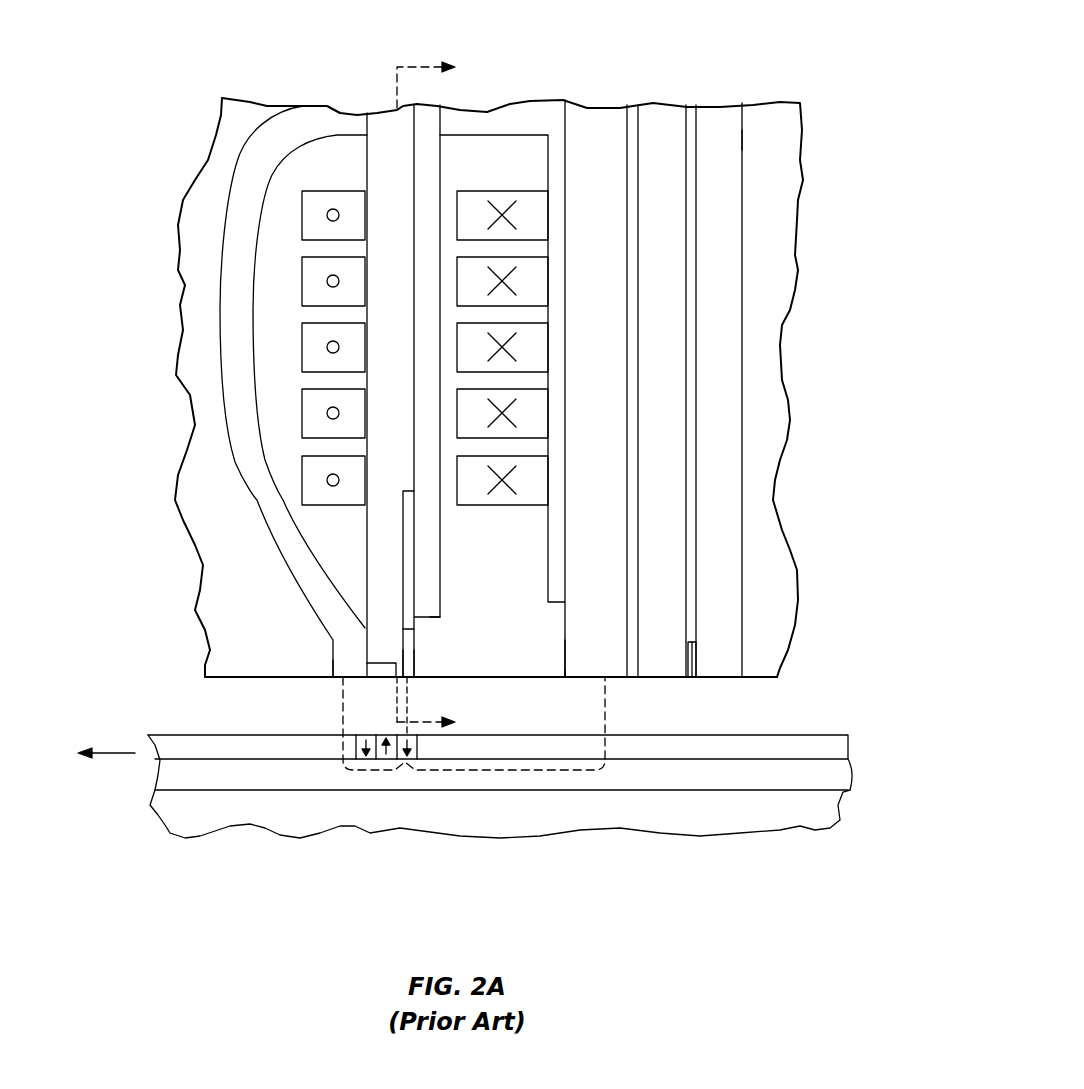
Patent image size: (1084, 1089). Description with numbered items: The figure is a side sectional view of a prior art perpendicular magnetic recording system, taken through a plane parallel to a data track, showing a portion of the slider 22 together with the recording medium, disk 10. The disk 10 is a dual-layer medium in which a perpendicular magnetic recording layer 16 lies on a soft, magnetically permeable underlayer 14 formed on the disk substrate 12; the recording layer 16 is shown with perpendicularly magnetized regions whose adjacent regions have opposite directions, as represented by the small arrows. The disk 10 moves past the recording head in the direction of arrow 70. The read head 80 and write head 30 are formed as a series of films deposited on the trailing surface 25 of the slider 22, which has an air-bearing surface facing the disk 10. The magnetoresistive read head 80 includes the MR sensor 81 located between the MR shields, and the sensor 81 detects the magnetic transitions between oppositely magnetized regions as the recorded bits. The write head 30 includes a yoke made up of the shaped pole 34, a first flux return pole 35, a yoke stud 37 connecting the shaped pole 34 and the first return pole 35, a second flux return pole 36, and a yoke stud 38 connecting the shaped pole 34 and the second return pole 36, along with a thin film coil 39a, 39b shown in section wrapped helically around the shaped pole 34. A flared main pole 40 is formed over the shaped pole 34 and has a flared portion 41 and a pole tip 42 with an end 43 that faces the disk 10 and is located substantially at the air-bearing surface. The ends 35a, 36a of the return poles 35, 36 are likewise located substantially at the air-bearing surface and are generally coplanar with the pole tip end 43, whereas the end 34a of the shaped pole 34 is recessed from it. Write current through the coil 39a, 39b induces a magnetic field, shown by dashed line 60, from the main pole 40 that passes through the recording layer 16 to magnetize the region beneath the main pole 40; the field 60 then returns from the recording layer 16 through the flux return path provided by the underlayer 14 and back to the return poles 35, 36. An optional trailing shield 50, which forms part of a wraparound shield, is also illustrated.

The disk 10 is at (467, 779).
The disk substrate 12 is at (200, 820).
The soft underlayer 14 is at (170, 772).
The recording layer 16 is at (213, 737).
The slider 22 is at (803, 178).
The trailing surface 25 is at (742, 137).
The write head 30 is at (242, 54).
The shaped pole 34 is at (430, 290).
The end of shaped pole 34a is at (432, 617).
The first flux return pole 35 is at (575, 648).
The end of first return pole 35a is at (605, 680).
The second flux return pole 36 is at (305, 595).
The end of second return pole 36a is at (337, 680).
The yoke stud 37 is at (530, 112).
The yoke stud 38 is at (390, 122).
The coil 39a is at (518, 191).
The coil 39b is at (335, 191).
The flared main pole 40 is at (413, 491).
The flared portion 41 is at (405, 565).
The pole tip 42 is at (413, 670).
The pole tip end 43 is at (413, 682).
The trailing shield 50 is at (380, 661).
The magnetic field 60 is at (375, 773).
The arrow 70 is at (120, 752).
The read head 80 is at (638, 50).
The MR sensor 81 is at (697, 650).